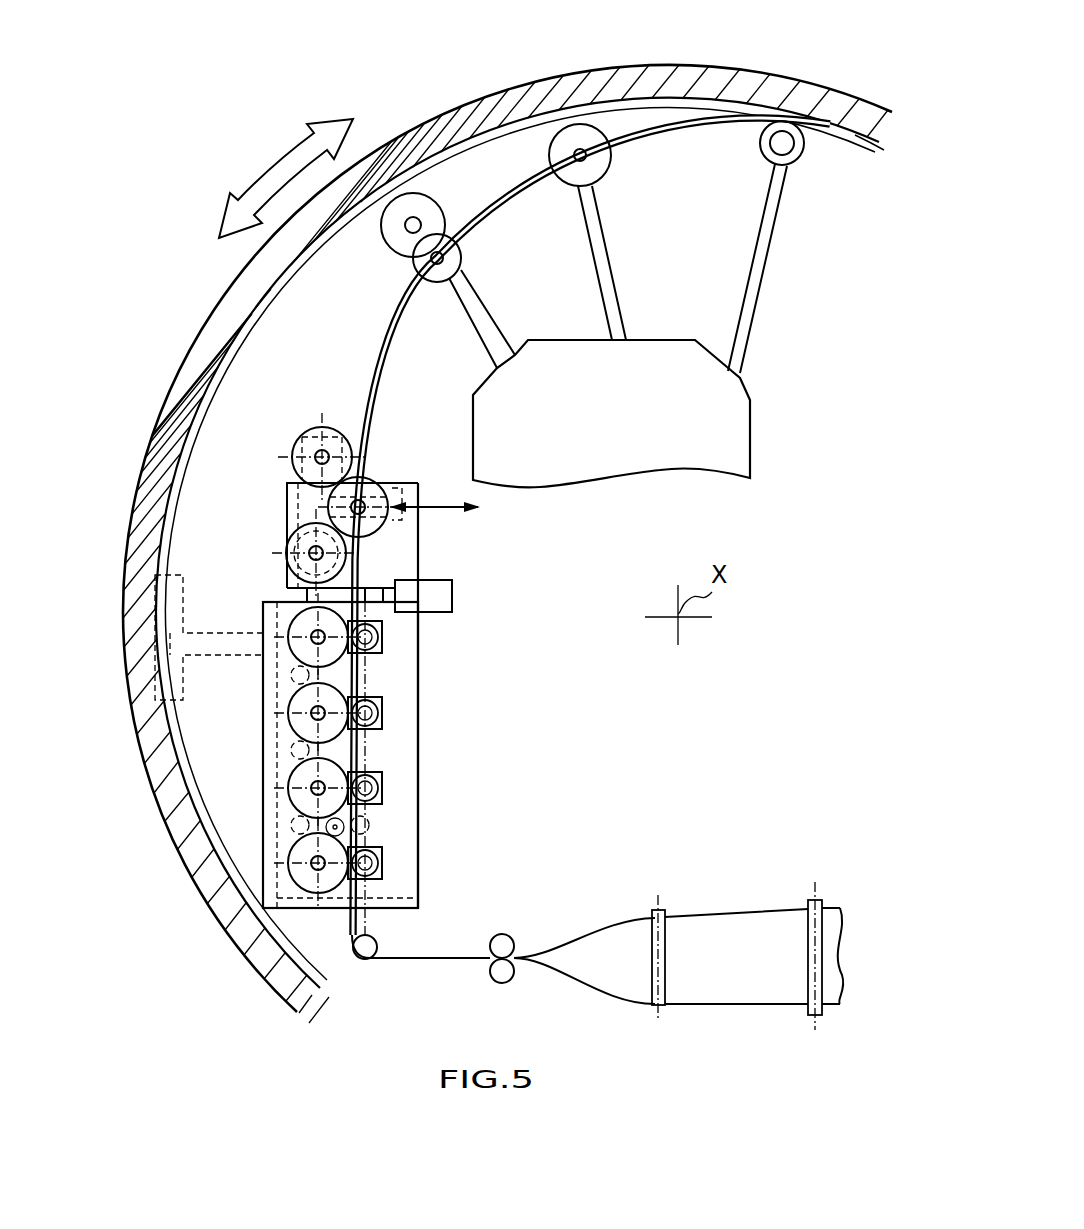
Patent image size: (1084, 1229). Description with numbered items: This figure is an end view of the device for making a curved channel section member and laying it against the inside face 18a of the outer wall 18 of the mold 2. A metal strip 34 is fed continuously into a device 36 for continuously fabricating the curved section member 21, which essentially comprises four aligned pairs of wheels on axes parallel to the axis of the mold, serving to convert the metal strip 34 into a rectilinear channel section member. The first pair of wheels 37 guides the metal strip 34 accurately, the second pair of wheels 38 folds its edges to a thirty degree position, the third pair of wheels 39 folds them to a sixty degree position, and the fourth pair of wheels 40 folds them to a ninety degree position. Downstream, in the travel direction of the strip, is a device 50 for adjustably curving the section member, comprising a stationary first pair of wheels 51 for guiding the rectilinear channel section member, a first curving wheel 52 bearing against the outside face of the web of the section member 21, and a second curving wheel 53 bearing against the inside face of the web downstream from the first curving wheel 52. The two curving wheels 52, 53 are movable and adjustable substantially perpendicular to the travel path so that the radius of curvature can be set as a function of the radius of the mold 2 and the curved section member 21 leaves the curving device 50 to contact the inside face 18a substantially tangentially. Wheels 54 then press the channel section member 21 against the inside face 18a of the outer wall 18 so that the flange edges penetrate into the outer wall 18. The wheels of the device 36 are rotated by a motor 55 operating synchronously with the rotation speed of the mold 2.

The mold 2 is at (468, 118).
The outer wall 18 is at (634, 110).
The inside face 18a is at (838, 150).
The curved channel section member 21 is at (704, 124).
The wheels 54 is at (775, 163).
The second curving wheel 53 is at (322, 428).
The first curving wheel 52 is at (372, 480).
The device for adjustably curving the section member 50 is at (421, 538).
The first pair of wheels 51 is at (418, 565).
The motor 55 is at (455, 597).
The fourth pair of wheels 40 is at (389, 637).
The third pair of wheels 39 is at (389, 713).
The second pair of wheels 38 is at (389, 788).
The first pair of wheels 37 is at (389, 863).
The device for continuously fabricating the curved section member 36 is at (486, 818).
The metal strip 34 is at (355, 941).